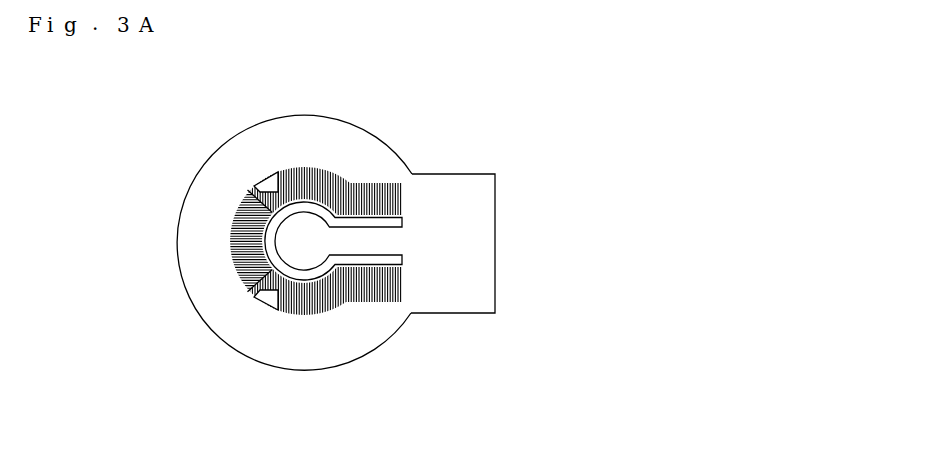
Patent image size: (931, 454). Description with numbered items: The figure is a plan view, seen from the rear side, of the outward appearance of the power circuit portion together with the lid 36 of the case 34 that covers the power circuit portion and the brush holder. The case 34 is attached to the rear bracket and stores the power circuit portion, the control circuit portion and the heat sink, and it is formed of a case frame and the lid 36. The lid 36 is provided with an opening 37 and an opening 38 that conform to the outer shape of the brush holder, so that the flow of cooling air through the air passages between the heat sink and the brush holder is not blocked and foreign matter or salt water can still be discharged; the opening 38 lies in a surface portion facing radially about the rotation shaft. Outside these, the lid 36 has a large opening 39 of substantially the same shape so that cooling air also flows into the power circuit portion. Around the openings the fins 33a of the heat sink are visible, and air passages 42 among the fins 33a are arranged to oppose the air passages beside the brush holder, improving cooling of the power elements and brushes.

The fins of the heat sink 33a is at (312, 168).
The case 34 is at (213, 151).
The lid 36 is at (468, 227).
The opening 37 is at (397, 258).
The opening 38 is at (270, 243).
The opening 39 is at (288, 170).
The air passages 42 is at (352, 187).